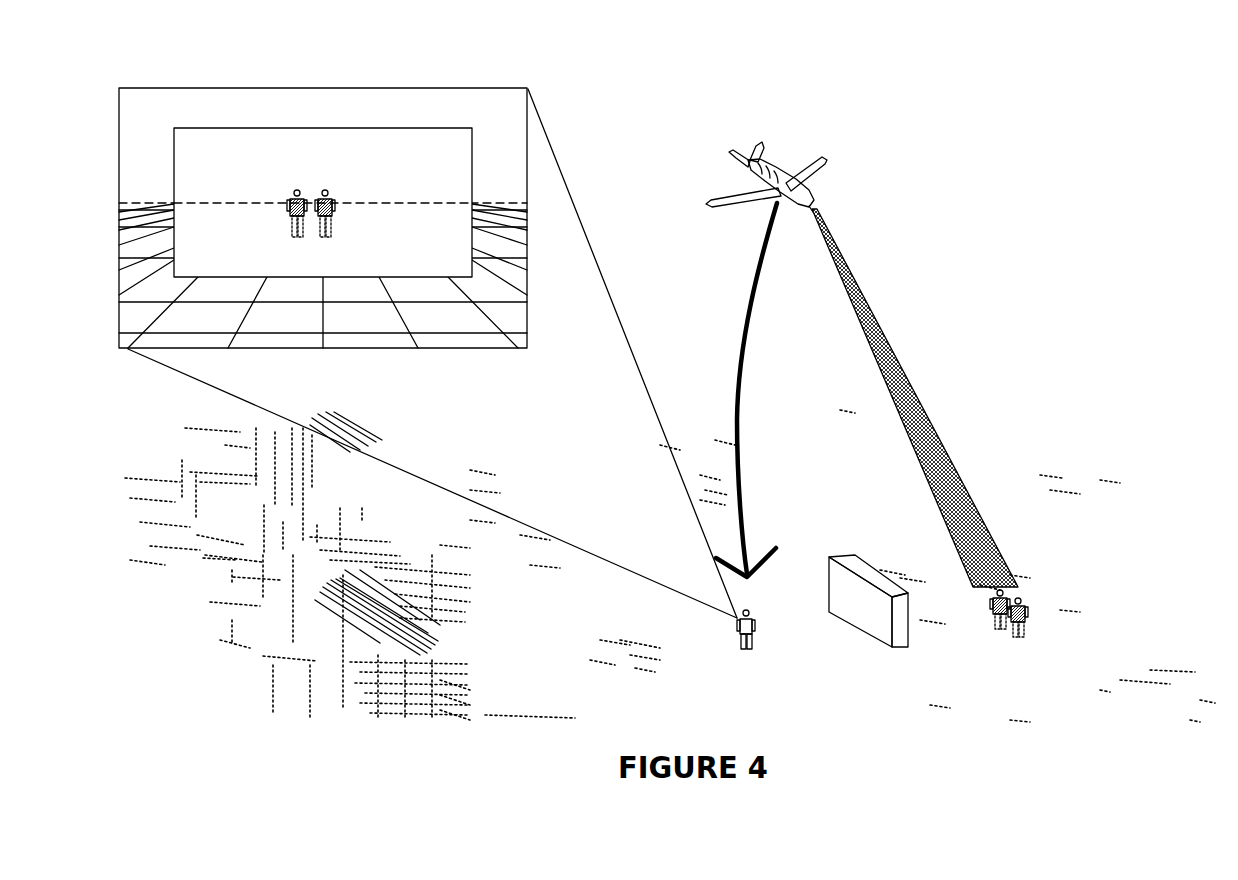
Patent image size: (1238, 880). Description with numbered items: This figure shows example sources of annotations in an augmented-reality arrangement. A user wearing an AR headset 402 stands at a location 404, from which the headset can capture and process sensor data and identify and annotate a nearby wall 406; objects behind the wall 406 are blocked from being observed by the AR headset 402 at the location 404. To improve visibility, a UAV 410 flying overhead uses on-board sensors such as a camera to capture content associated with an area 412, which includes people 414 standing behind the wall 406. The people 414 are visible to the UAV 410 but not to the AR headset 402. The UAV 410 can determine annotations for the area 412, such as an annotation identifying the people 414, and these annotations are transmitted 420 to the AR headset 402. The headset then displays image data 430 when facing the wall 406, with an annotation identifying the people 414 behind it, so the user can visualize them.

The AR headset 402 is at (727, 623).
The location 404 is at (725, 690).
The wall 406 is at (411, 169).
The UAV 410 is at (750, 127).
The area 412 is at (918, 376).
The people 414 is at (291, 172).
The transmission of annotations 420 is at (688, 373).
The image data 430 is at (206, 80).